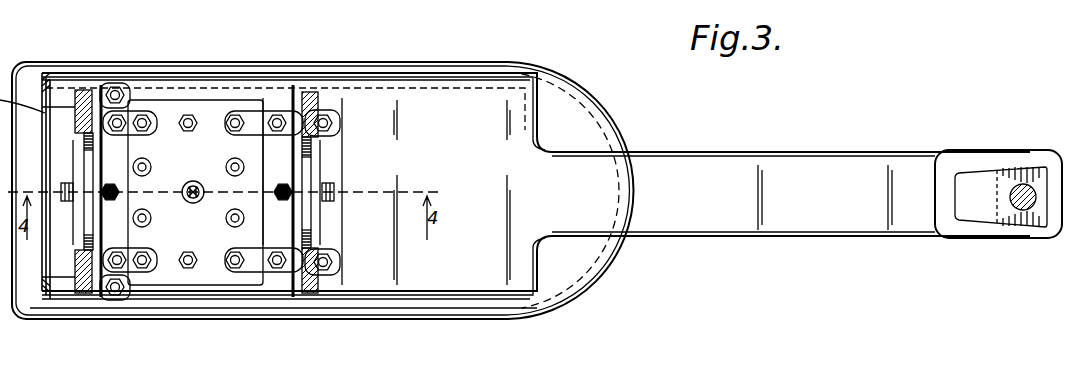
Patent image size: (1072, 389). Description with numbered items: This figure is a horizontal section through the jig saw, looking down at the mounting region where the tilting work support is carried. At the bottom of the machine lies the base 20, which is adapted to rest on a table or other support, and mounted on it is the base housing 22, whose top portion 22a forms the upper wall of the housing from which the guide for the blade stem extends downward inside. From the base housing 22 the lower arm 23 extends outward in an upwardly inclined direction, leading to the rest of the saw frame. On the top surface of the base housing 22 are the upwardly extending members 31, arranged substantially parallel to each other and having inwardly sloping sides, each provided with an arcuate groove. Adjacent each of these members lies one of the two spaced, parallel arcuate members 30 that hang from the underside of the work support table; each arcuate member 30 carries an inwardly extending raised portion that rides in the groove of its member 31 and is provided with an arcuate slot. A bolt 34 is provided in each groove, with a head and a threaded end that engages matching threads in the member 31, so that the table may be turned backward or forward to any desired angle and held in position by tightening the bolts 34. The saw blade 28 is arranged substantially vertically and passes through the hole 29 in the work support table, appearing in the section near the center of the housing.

The base 20 is at (572, 280).
The base housing 22 is at (458, 88).
The top portion of the base housing 22a is at (175, 245).
The lower arm 23 is at (778, 158).
The saw blade 28 is at (193, 181).
The hole 29 is at (958, 170).
The arcuate members 30 is at (88, 92).
The upwardly extending members 31 is at (95, 168).
The bolt 34 is at (66, 183).